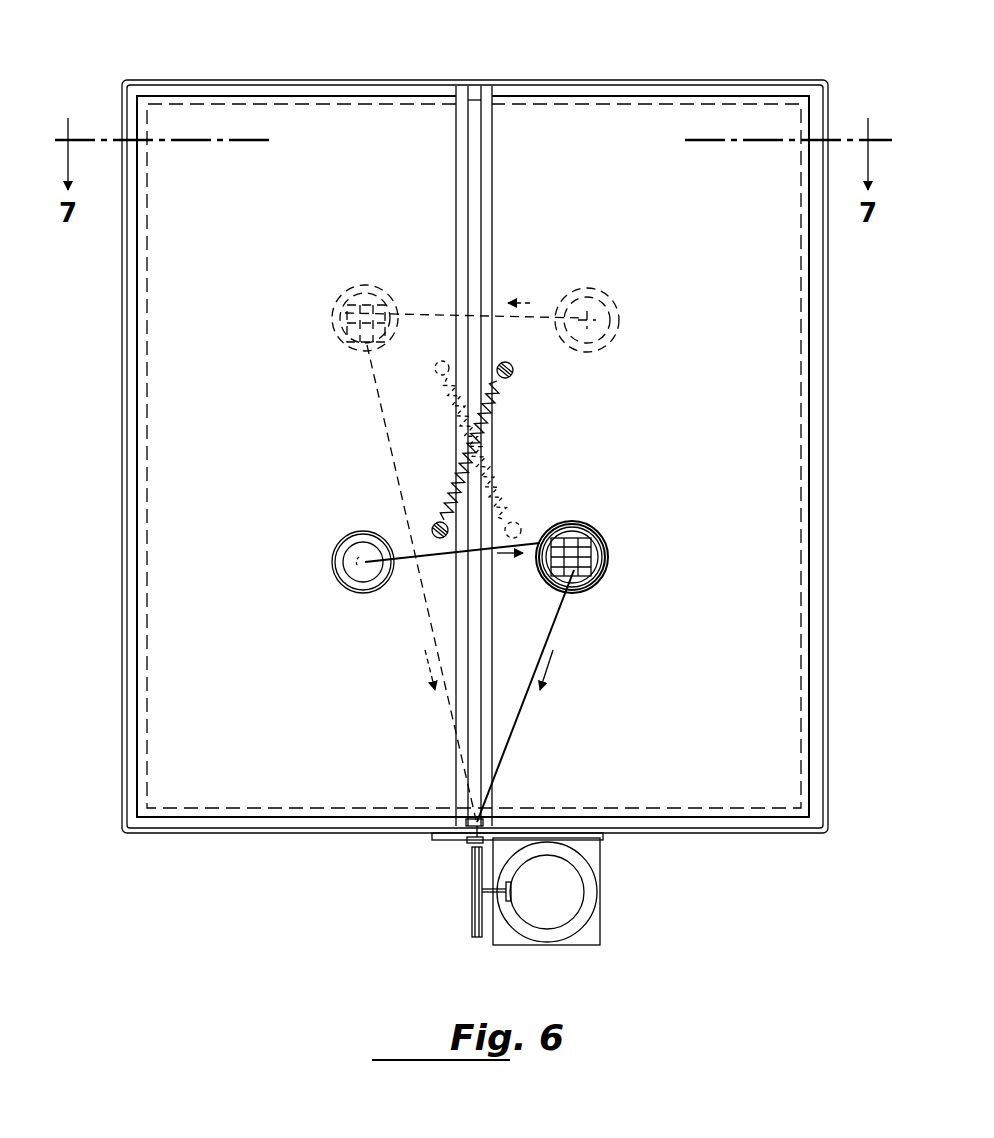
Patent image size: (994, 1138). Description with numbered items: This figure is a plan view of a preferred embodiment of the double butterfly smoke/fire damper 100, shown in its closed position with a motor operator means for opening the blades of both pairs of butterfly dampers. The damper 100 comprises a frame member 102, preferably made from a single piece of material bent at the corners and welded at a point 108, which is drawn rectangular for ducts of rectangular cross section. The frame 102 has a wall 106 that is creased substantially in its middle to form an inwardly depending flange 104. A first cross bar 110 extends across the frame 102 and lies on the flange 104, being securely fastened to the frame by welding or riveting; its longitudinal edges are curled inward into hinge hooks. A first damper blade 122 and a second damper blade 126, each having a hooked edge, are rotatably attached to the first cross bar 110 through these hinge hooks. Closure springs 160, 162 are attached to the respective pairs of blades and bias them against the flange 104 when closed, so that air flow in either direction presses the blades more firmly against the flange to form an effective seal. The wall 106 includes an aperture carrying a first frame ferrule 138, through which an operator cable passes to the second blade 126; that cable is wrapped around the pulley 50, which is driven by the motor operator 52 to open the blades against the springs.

The double butterfly smoke/fire damper 100 is at (479, 416).
The frame member 102 is at (340, 80).
The flange 104 is at (430, 104).
The wall 106 is at (407, 82).
The weld point 108 is at (475, 82).
The first cross bar 110 is at (470, 122).
The first damper blade 122 is at (185, 500).
The second damper blade 126 is at (783, 563).
The first frame ferrule 138 is at (467, 843).
The pulley 50 is at (470, 925).
The motor operator 52 is at (565, 900).
The closure spring 160 is at (497, 402).
The closure spring 162 is at (507, 497).